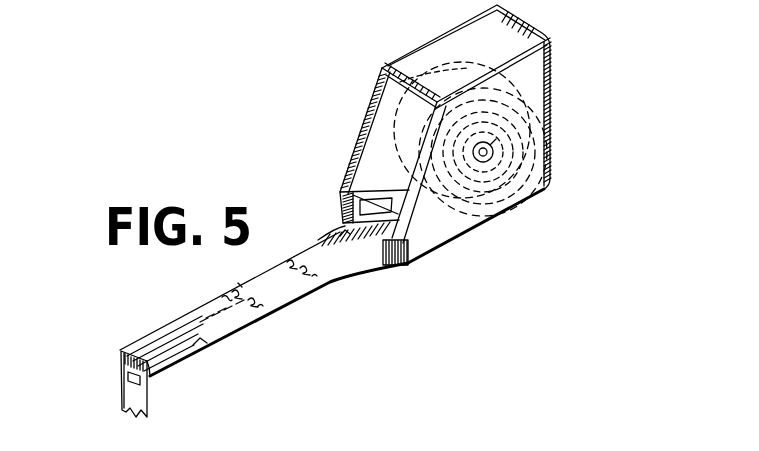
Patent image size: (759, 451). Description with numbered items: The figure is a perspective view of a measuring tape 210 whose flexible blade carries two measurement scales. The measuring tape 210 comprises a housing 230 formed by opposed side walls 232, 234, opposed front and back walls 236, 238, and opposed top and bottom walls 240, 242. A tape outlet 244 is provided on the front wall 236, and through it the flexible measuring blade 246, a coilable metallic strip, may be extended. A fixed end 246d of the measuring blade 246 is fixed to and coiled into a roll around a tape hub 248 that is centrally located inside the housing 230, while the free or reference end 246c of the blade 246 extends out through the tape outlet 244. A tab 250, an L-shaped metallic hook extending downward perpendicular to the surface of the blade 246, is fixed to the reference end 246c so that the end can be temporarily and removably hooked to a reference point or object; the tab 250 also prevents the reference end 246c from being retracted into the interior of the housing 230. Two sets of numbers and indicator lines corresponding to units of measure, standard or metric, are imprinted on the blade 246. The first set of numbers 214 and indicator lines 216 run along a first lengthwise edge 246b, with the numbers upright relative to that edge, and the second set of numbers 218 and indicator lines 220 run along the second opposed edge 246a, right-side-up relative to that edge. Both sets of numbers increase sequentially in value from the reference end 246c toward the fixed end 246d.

The measuring tape 210 is at (553, 90).
The first set of numbers 214 is at (358, 247).
The indicator lines 216 is at (372, 252).
The second set of numbers 218 is at (287, 263).
The indicator lines 220 is at (283, 250).
The housing 230 is at (548, 65).
The side wall 232 is at (533, 95).
The side wall 234 is at (427, 50).
The front wall 236 is at (375, 142).
The back wall 238 is at (535, 165).
The top wall 240 is at (533, 22).
The bottom wall 242 is at (522, 222).
The tape outlet 244 is at (420, 256).
The measuring blade 246 is at (222, 297).
The second opposed edge 246a is at (238, 283).
The first lengthwise edge 246b is at (238, 331).
The reference end 246c is at (120, 353).
The fixed end 246d is at (495, 151).
The tape hub 248 is at (497, 191).
The tab 250 is at (120, 398).